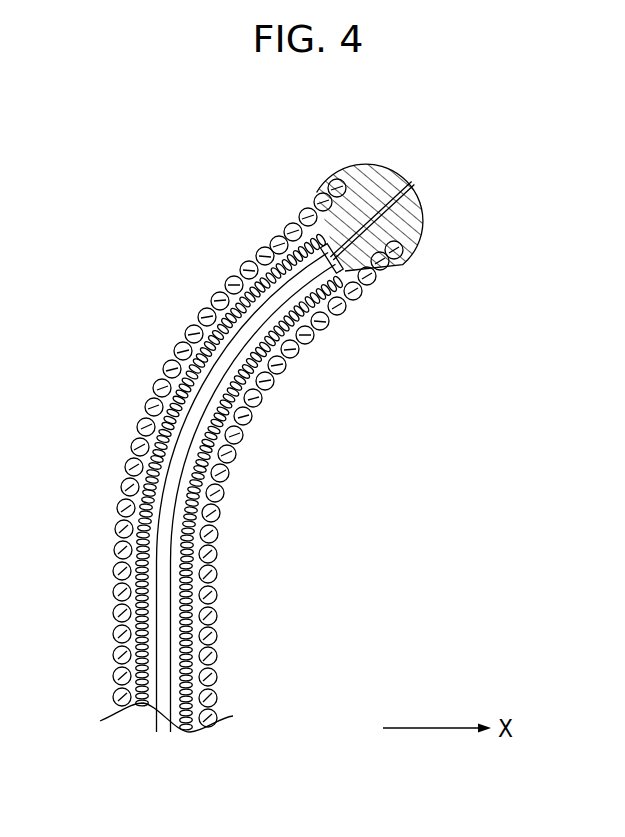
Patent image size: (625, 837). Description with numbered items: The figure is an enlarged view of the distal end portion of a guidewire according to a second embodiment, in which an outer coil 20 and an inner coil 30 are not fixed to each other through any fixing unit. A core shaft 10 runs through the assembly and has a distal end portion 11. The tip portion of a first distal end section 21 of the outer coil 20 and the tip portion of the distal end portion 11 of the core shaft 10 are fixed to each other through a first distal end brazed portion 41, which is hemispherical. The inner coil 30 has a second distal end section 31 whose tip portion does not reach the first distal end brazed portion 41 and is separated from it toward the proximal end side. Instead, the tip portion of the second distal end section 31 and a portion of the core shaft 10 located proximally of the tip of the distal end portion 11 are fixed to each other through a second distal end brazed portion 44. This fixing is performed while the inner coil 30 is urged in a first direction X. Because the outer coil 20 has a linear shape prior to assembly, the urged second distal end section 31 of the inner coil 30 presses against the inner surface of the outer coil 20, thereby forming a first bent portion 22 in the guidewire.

The core shaft 10 is at (246, 493).
The distal end portion 11 is at (166, 685).
The outer coil 20 is at (216, 594).
The first distal end section 21 is at (298, 485).
The first bent portion 22 is at (250, 441).
The inner coil 30 is at (133, 546).
The second distal end section 31 is at (298, 242).
The first distal end brazed portion 41 is at (407, 228).
The second distal end brazed portion 44 is at (373, 280).